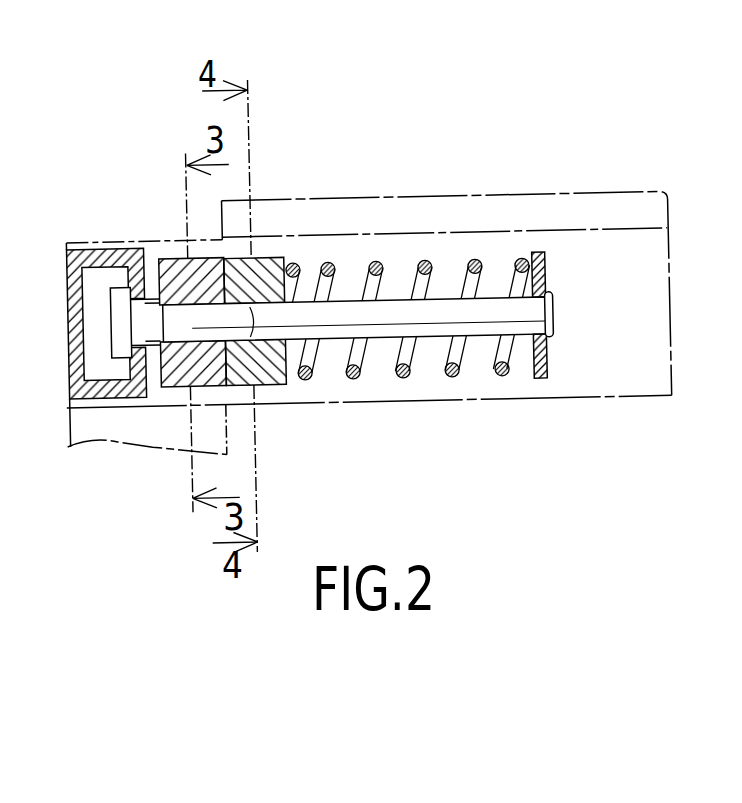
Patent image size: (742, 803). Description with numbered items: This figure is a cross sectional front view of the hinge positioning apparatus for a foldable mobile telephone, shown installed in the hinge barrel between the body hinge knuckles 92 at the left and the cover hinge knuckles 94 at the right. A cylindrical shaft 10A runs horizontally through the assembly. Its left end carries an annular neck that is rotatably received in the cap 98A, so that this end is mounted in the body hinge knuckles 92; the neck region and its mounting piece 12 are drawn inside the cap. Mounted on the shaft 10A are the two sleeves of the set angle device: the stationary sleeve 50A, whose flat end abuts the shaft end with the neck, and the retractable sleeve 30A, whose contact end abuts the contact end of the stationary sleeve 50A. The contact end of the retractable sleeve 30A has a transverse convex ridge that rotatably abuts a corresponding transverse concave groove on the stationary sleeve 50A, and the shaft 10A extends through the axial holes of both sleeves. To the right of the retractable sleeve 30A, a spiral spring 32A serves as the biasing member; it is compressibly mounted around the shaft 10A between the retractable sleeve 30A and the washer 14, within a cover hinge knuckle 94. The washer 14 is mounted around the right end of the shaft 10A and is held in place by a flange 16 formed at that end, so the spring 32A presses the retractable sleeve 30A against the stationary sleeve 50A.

The cylindrical shaft 10A is at (349, 300).
The slider 12 is at (138, 250).
The washer 14 is at (540, 253).
The flange 16 is at (552, 328).
The retractable sleeve 30A is at (275, 258).
The spiral spring 32A is at (426, 260).
The stationary sleeve 50A is at (168, 258).
The body hinge knuckles 92 is at (108, 438).
The cover hinge knuckles 94 is at (620, 207).
The housing cup 98A is at (93, 250).